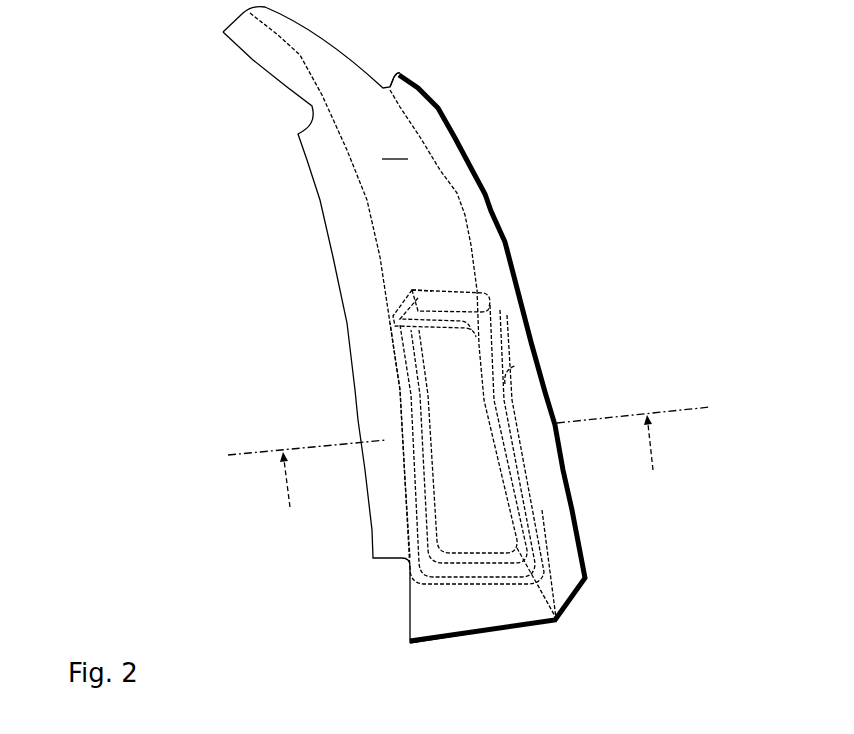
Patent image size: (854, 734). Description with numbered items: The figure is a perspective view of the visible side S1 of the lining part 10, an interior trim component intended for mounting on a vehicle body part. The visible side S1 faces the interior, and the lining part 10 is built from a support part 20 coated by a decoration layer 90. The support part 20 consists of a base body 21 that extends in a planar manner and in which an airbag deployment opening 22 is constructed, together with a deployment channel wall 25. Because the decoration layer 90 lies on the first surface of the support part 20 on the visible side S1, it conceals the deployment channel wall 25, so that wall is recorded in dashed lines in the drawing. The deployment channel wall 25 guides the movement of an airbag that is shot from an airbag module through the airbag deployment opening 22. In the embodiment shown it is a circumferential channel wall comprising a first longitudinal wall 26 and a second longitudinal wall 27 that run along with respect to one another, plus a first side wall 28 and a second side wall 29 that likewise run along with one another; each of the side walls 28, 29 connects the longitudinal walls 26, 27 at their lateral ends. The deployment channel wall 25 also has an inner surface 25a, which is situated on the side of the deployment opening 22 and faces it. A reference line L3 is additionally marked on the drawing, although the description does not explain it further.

The lining part 10 is at (186, 96).
The support part 20 is at (440, 74).
The base body 21 is at (439, 102).
The airbag deployment opening 22 is at (452, 310).
The deployment channel wall 25 is at (477, 282).
The inner surface 25a is at (463, 333).
The first longitudinal wall 26 is at (427, 352).
The second longitudinal wall 27 is at (515, 366).
The first side wall 28 is at (477, 567).
The second side wall 29 is at (430, 290).
The decoration layer 90 is at (395, 75).
The visible side S1 is at (395, 149).
The reference line L3 is at (470, 452).